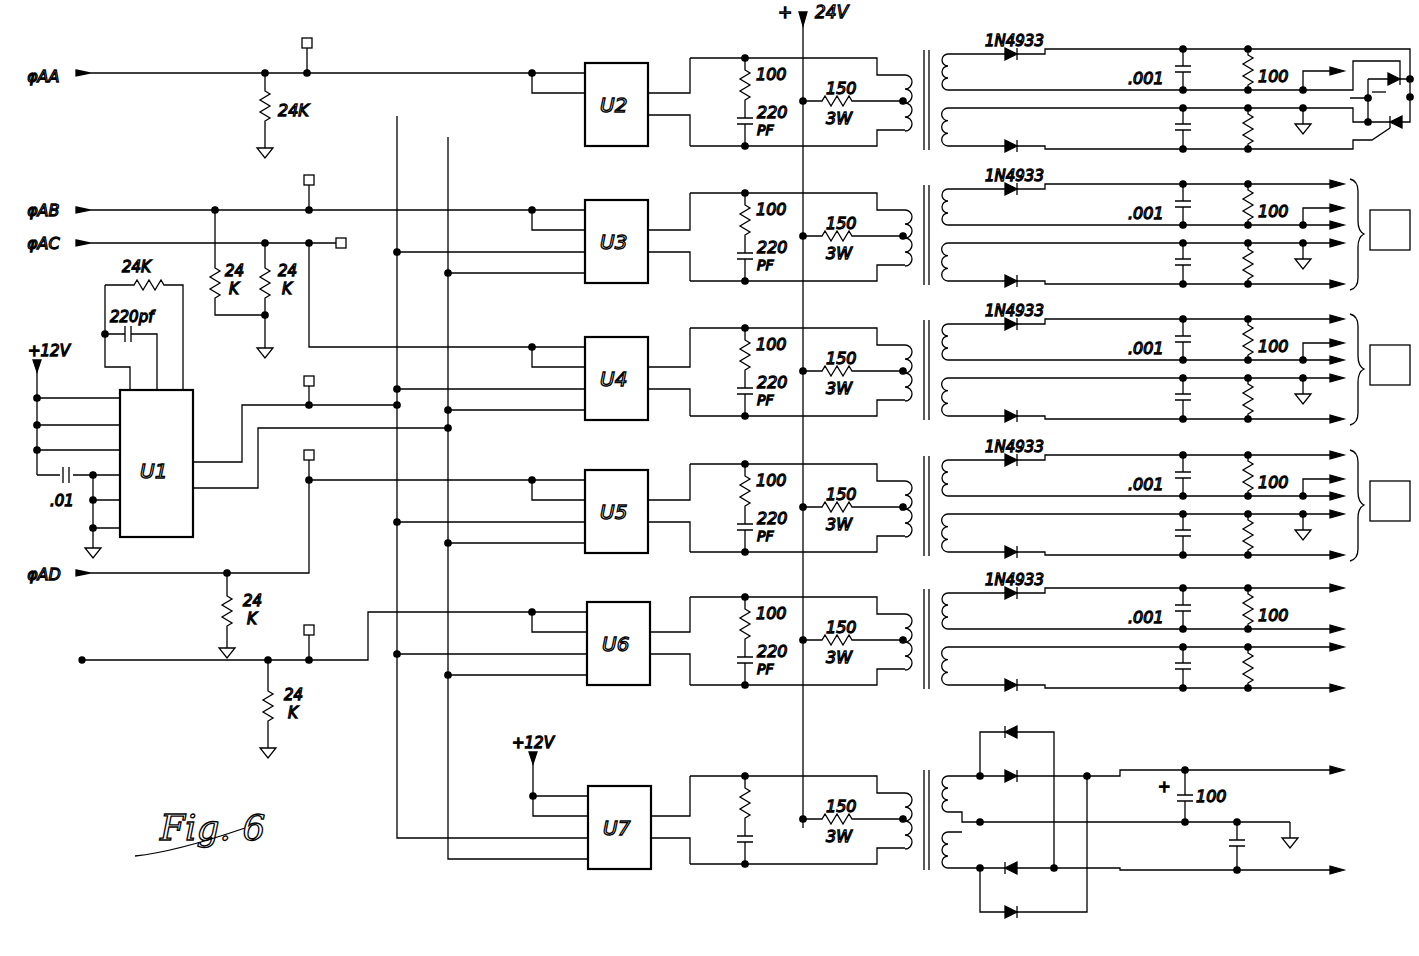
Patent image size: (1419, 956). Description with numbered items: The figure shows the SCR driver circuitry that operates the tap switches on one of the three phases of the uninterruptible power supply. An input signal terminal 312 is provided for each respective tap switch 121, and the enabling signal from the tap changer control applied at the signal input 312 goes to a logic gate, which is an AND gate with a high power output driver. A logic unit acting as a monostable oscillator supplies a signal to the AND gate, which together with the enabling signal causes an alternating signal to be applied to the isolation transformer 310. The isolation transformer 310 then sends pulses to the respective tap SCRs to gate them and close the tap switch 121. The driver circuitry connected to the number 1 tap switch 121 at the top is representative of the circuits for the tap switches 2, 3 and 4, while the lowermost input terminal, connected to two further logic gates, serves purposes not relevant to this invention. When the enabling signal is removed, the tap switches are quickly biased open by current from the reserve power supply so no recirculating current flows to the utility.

The isolation transformer 310 is at (917, 51).
The input signal terminal 312 is at (194, 72).
The tap switch 121 is at (1408, 130).
The number one tap switch 1 is at (1383, 100).
The number two tap switch 2 is at (1390, 230).
The number three tap switch 3 is at (1390, 365).
The number four tap switch 4 is at (1390, 501).